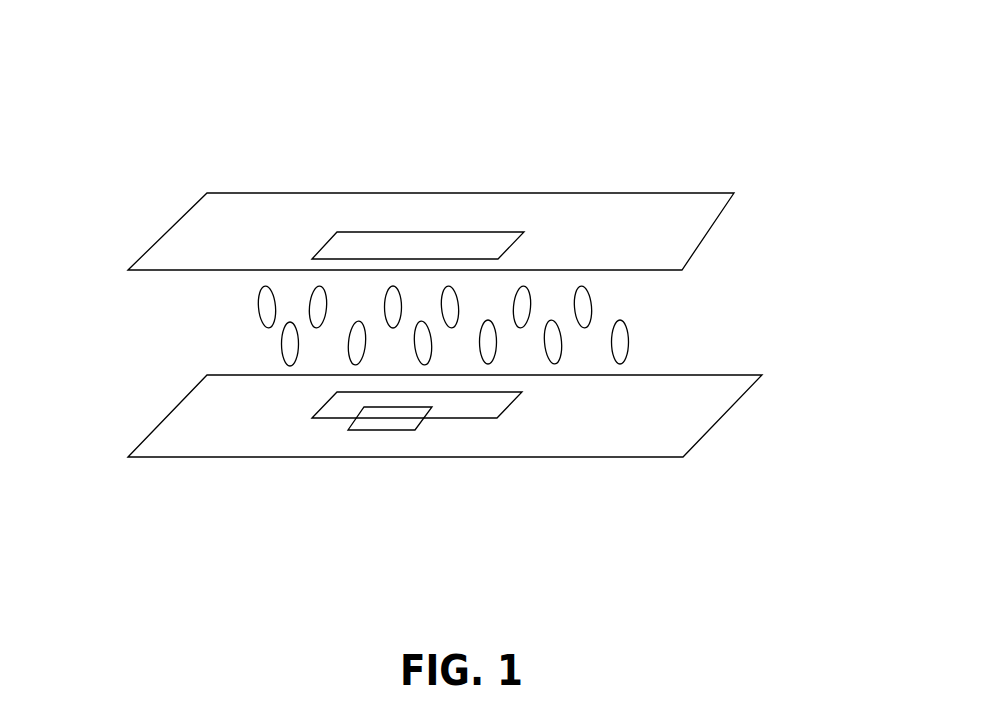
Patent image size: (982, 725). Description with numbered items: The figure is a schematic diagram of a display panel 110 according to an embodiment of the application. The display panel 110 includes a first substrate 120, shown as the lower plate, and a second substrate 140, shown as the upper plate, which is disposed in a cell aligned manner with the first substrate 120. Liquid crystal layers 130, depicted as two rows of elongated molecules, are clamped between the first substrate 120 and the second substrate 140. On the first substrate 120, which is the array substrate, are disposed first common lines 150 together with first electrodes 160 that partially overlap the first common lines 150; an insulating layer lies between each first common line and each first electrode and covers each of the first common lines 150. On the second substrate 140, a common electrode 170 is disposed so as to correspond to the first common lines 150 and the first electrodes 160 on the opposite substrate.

The display panel 110 is at (350, 108).
The first substrate 120 is at (484, 484).
The liquid crystal layers 130 is at (262, 317).
The second substrate 140 is at (484, 181).
The first common lines 150 is at (375, 422).
The first electrodes 160 is at (480, 402).
The common electrode 170 is at (455, 250).